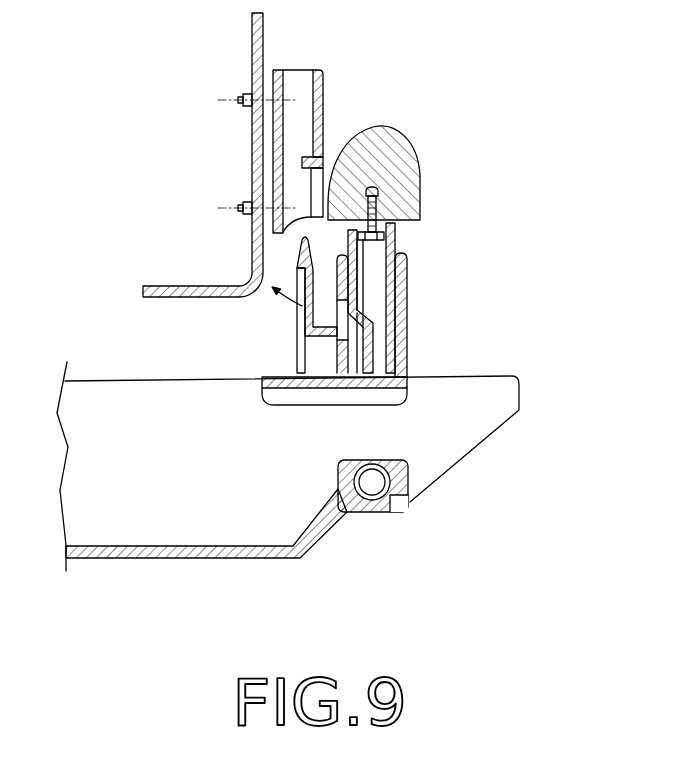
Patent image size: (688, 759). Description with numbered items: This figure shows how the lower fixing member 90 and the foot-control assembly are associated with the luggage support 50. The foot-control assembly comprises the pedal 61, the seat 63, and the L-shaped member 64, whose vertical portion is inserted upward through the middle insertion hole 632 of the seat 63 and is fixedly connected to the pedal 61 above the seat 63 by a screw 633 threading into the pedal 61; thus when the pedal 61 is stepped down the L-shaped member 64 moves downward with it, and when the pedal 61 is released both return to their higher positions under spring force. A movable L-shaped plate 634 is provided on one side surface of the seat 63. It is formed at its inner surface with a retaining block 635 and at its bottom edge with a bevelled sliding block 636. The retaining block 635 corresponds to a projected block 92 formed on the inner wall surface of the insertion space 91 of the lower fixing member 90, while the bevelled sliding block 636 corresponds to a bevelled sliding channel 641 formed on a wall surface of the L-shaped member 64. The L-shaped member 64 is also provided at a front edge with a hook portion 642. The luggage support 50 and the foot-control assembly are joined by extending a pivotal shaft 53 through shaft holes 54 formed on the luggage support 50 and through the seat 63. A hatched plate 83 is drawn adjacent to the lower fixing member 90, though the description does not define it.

The luggage support 50 is at (235, 558).
The pivotal shaft 53 is at (368, 490).
The shaft holes 54 is at (345, 473).
The pedal 61 is at (400, 162).
The seat 63 is at (402, 342).
The L-shaped member 64 is at (403, 383).
The mounting plate 83 is at (256, 48).
The lower fixing member 90 is at (318, 72).
The insertion space 91 is at (301, 77).
The projected block 92 is at (304, 159).
The middle insertion hole 632 is at (392, 244).
The screw 633 is at (372, 243).
The movable L-shaped plate 634 is at (300, 312).
The retaining block 635 is at (314, 280).
The bevelled sliding block 636 is at (358, 318).
The bevelled sliding channel 641 is at (372, 316).
The hook portion 642 is at (261, 378).